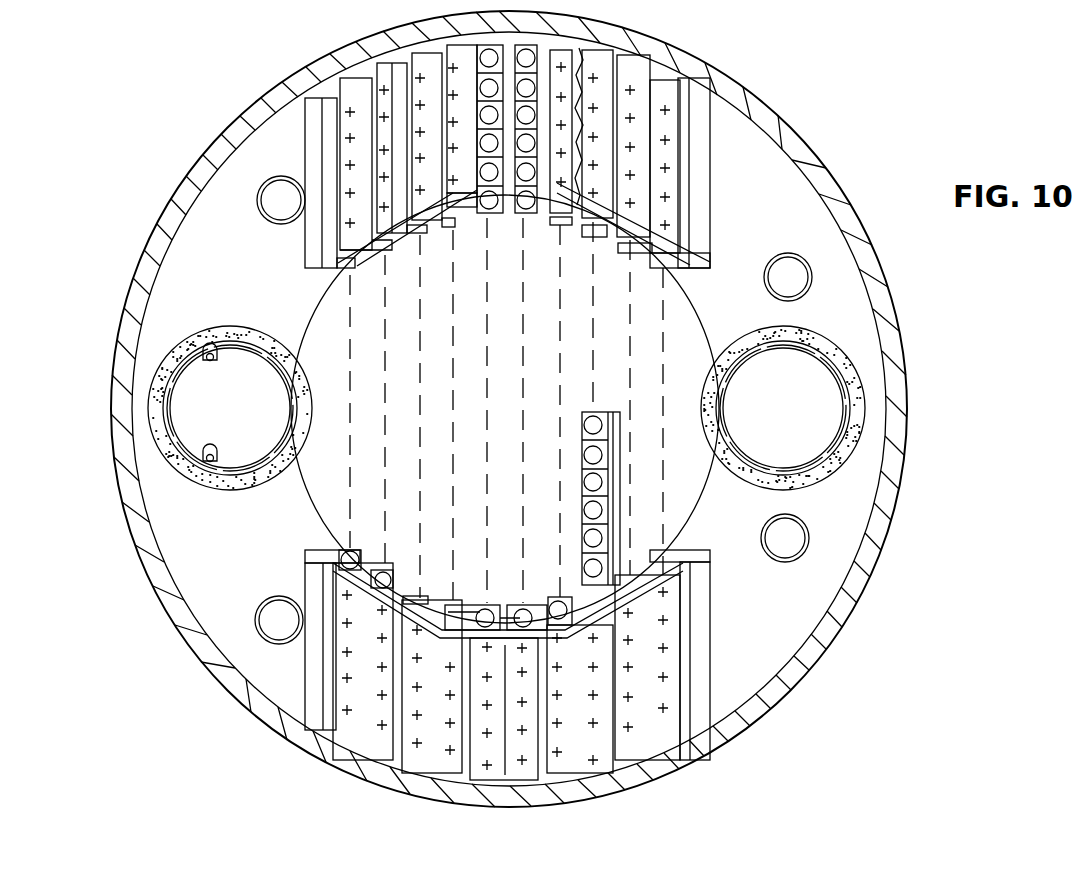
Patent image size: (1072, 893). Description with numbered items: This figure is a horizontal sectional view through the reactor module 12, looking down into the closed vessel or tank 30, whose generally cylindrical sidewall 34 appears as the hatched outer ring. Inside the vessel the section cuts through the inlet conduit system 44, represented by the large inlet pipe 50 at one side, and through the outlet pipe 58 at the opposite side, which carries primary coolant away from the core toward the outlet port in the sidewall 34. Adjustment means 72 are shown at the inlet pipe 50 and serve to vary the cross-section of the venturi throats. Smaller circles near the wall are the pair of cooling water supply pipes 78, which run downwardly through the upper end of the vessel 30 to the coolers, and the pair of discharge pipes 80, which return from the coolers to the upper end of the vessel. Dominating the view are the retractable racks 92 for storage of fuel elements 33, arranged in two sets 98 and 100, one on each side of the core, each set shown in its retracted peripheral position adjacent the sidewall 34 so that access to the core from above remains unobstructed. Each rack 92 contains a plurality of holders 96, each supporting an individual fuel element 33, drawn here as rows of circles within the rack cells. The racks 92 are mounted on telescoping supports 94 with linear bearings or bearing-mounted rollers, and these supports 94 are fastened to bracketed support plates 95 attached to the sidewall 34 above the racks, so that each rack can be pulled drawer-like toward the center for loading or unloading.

The reactor module 12 is at (808, 683).
The closed vessel or tank 30 is at (843, 629).
The cylindrical sidewall 34 is at (867, 585).
The inlet conduit system 44 is at (230, 409).
The inlet pipe 50 is at (245, 360).
The outlet pipe 58 is at (805, 354).
The adjustment means 72 is at (206, 450).
The cooling water supply pipes 78 is at (256, 203).
The discharge pipes 80 is at (788, 258).
The retractable racks 92 is at (438, 232).
The telescoping supports 94 is at (345, 250).
The bracketed support plates 95 is at (698, 181).
The holders 96 is at (597, 498).
The fuel elements 33 is at (597, 512).
The set of racks 98 is at (300, 670).
The set of racks 100 is at (450, 402).